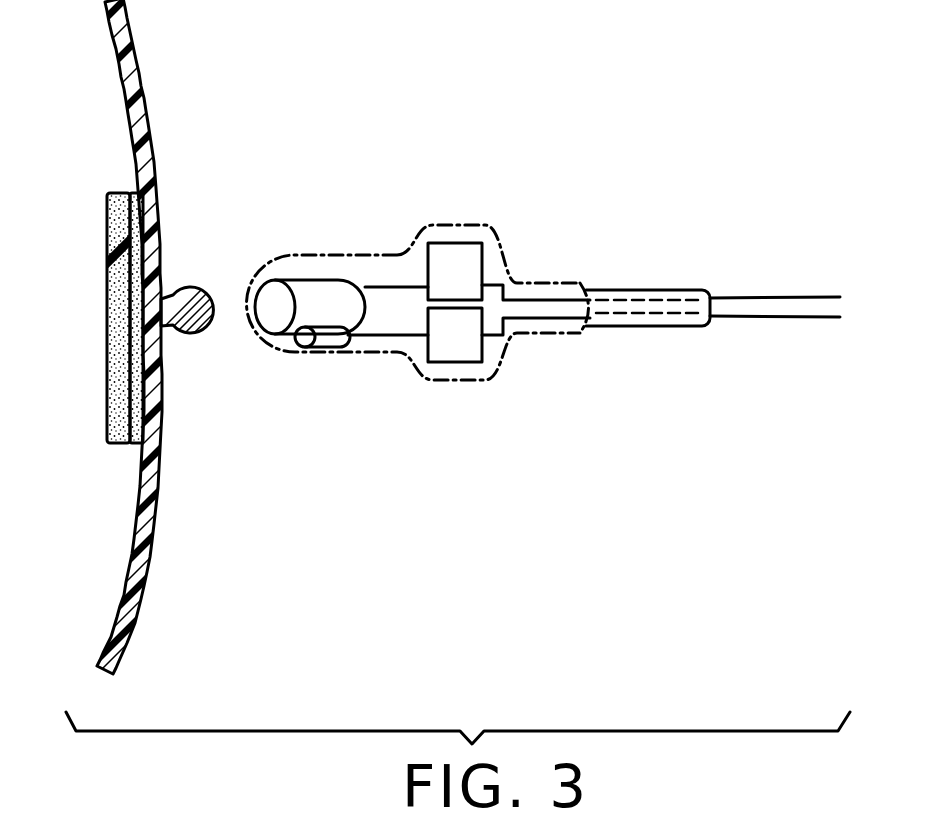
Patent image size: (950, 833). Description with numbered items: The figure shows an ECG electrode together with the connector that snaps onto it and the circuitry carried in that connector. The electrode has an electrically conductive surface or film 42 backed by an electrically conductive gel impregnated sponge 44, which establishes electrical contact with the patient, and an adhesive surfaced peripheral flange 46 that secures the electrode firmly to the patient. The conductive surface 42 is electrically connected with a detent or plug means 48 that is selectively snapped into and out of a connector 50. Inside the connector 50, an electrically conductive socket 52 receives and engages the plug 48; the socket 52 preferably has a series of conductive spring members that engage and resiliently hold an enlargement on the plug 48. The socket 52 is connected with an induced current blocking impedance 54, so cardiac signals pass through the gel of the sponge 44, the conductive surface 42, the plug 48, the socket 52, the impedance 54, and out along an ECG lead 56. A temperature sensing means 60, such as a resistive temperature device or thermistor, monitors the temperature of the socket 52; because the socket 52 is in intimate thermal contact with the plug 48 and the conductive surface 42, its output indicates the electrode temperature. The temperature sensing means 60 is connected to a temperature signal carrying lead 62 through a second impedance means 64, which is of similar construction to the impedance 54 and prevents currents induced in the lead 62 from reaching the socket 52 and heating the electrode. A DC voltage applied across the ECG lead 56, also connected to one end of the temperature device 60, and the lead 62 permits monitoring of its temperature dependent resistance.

The electrically conductive surface 42 is at (110, 432).
The electrically conductive gel impregnated sponge 44 is at (108, 390).
The adhesive surfaced peripheral flange 46 is at (156, 483).
The detent or plug means 48 is at (190, 287).
The connector 50 is at (446, 205).
The electrically conductive socket 52 is at (329, 278).
The induced current blocking impedance 54 is at (483, 257).
The ECG lead 56 is at (755, 300).
The temperature sensing means 60 is at (332, 337).
The temperature signal carrying lead 62 is at (748, 317).
The second impedance means 64 is at (483, 352).